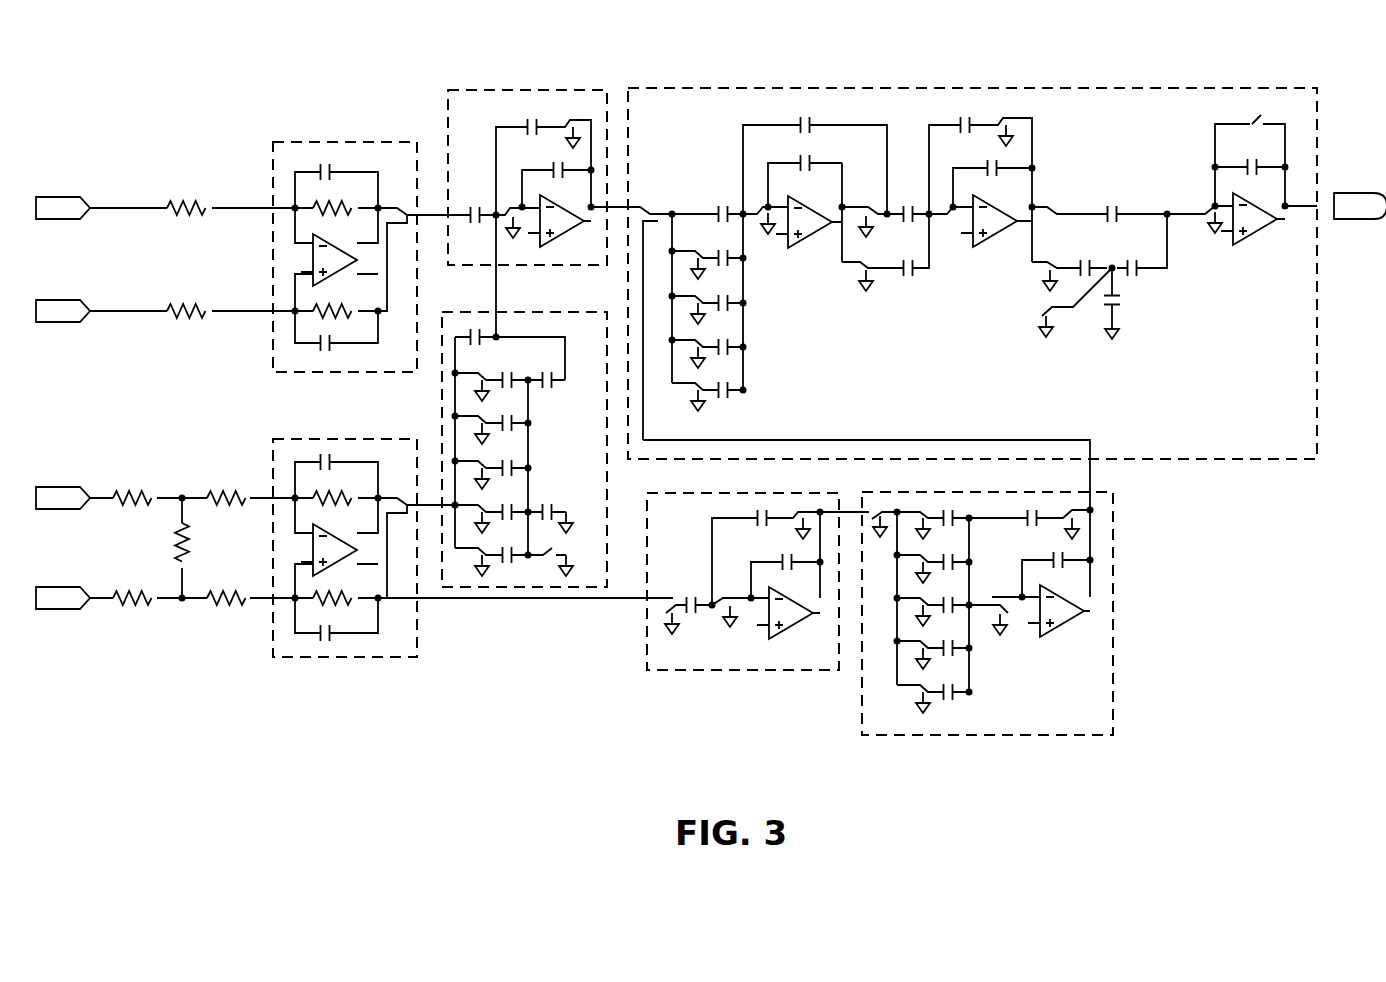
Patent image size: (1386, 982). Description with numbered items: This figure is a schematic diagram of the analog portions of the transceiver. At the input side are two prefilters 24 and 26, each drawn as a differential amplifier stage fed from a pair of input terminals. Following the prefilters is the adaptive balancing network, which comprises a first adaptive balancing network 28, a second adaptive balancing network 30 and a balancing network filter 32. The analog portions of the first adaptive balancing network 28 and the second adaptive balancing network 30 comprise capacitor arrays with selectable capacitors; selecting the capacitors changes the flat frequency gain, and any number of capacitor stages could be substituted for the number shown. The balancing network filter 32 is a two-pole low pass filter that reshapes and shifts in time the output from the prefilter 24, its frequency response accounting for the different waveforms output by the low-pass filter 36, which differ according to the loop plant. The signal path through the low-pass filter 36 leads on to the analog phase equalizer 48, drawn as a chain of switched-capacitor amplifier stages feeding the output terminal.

The prefilter 24 is at (293, 435).
The prefilter 26 is at (300, 137).
The first adaptive balancing network 28 is at (437, 413).
The second adaptive balancing network 30 is at (1115, 638).
The balancing network filter 32 is at (640, 630).
The low-pass filter 36 is at (445, 103).
The analog phase equalizer 48 is at (1200, 459).